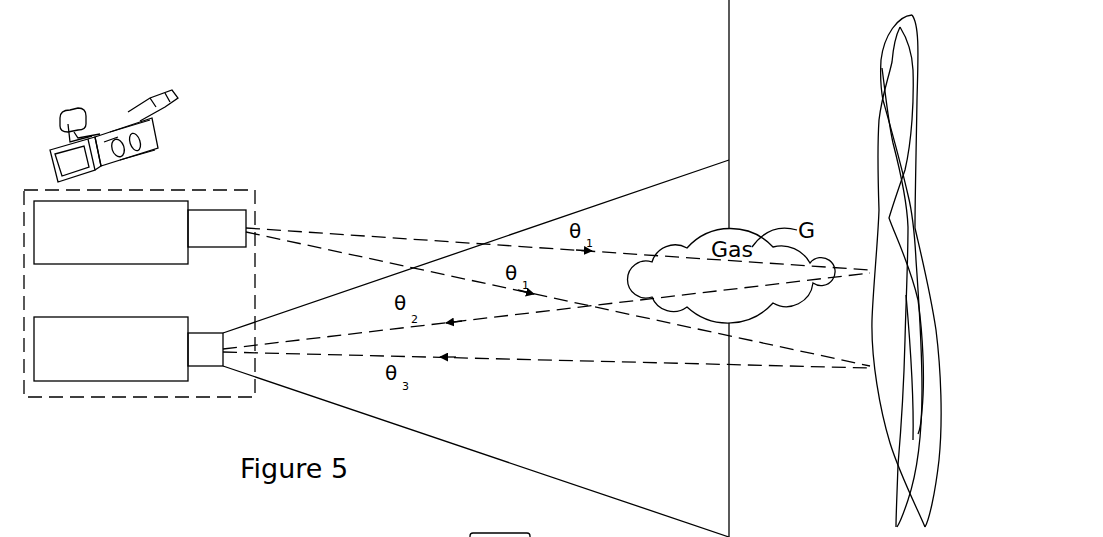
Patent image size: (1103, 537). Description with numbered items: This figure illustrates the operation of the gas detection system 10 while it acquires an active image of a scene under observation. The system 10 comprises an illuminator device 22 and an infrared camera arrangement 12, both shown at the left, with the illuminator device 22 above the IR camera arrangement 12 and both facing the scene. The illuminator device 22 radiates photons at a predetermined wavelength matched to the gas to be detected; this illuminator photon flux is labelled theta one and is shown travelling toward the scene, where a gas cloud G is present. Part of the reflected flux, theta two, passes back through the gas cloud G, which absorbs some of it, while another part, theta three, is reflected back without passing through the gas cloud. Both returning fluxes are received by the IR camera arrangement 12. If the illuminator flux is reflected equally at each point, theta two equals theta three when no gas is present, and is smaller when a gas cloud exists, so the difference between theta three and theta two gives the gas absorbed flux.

The system for facilitating the detection of a predetermined gas 10 is at (70, 84).
The illuminator device 22 is at (172, 212).
The infrared (IR) camera arrangement 12 is at (145, 333).